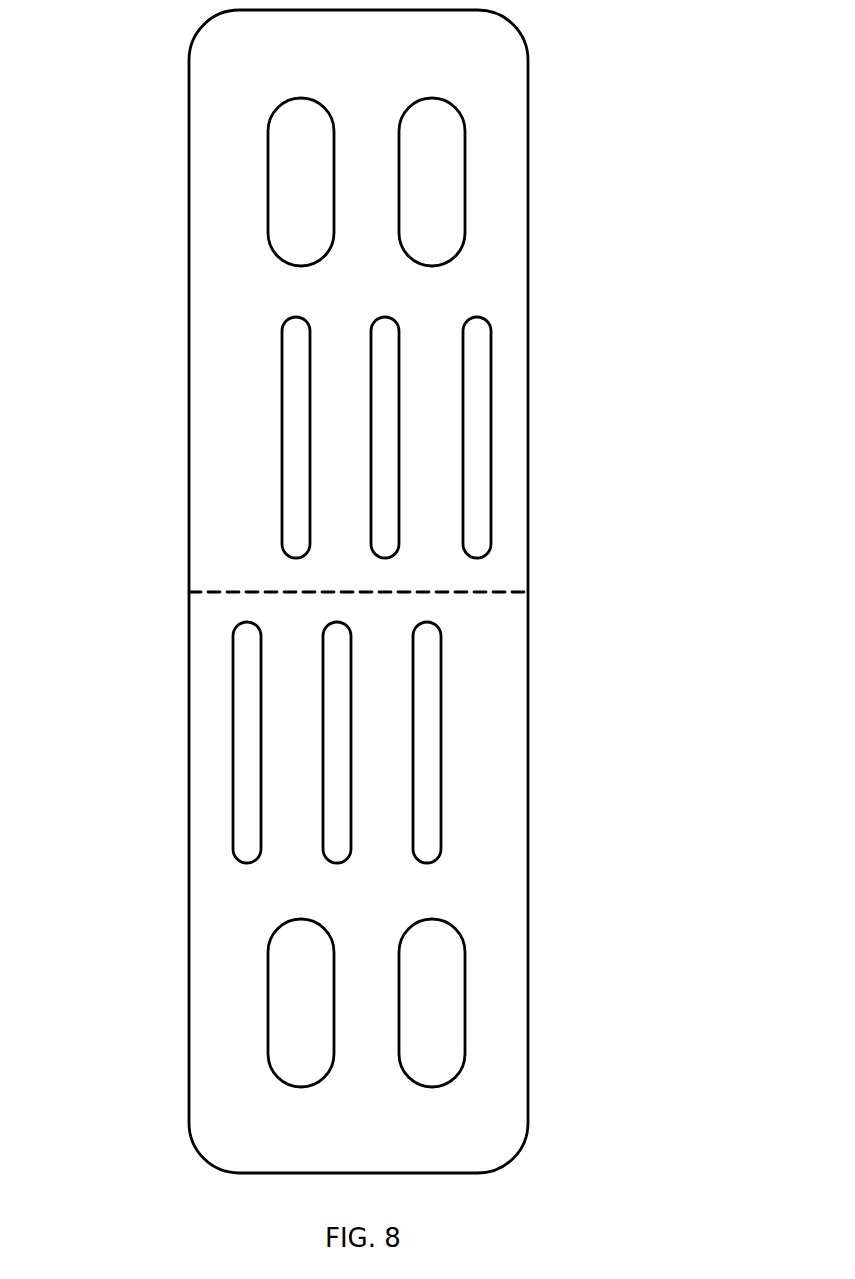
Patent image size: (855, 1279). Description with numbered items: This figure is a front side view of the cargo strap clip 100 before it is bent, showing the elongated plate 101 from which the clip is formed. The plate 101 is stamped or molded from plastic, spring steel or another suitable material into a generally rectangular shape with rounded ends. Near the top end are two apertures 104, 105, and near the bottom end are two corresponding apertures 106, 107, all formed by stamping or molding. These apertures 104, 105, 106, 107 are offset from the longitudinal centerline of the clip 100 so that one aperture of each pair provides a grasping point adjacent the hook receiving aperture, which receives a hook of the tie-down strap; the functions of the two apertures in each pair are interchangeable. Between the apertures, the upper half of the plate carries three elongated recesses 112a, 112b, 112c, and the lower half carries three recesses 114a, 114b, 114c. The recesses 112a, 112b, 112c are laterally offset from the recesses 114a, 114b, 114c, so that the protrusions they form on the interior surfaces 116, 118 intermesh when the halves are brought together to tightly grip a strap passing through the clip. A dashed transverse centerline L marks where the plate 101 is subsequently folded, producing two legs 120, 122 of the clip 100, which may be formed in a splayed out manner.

The cargo strap clip 100 is at (619, 351).
The elongated plate 101 is at (500, 57).
The aperture 104 is at (268, 182).
The aperture 105 is at (465, 180).
The aperture 106 is at (268, 1003).
The aperture 107 is at (465, 1002).
The recess 112a is at (282, 475).
The recess 112b is at (371, 328).
The recess 112c is at (490, 517).
The recess 114a is at (442, 743).
The recess 114b is at (323, 635).
The recess 114c is at (233, 777).
The interior surface 116 is at (503, 285).
The interior surface 118 is at (498, 890).
The leg 120 is at (490, 433).
The leg 122 is at (527, 803).
The centerline L is at (480, 592).